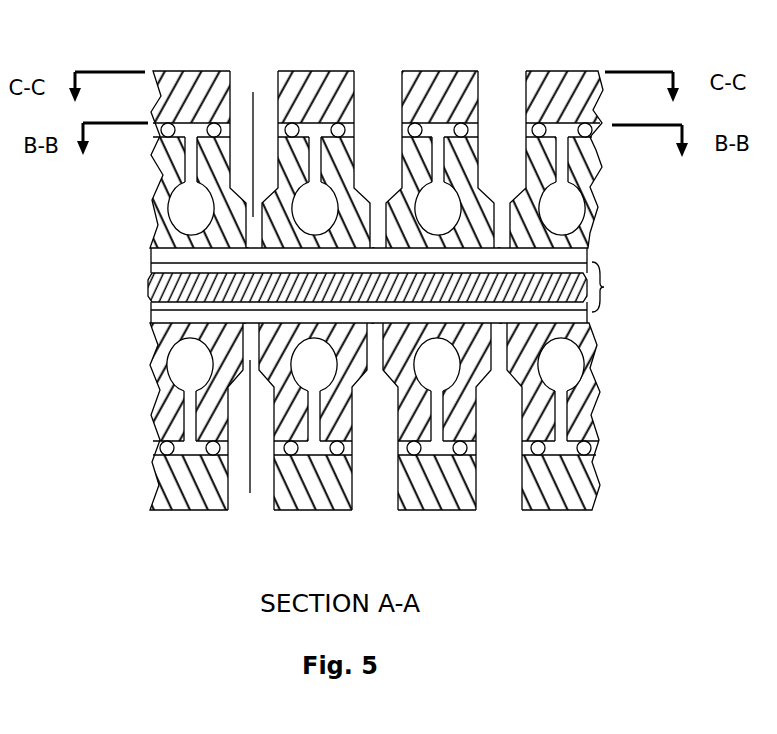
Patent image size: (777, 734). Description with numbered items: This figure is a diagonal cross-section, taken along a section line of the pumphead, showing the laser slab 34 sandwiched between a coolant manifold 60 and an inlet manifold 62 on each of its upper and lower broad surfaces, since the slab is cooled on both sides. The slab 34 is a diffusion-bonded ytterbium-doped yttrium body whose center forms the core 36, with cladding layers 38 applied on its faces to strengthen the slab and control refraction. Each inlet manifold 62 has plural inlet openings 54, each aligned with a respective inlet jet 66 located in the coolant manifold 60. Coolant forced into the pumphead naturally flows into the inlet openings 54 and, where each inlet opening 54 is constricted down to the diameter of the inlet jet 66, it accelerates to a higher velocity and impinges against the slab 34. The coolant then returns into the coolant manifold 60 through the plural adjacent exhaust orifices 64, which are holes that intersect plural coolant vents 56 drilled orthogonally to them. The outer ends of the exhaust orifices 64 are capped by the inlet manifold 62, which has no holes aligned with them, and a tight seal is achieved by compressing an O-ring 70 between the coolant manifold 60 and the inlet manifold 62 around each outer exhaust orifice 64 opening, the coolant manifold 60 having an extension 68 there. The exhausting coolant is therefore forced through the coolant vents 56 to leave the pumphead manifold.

The laser slab 34 is at (604, 287).
The core 36 is at (147, 283).
The cladding layers 38 is at (152, 265).
The inlet openings 54 is at (262, 86).
The coolant vents 56 is at (167, 206).
The coolant manifold 60 is at (183, 172).
The inlet manifold 62 is at (183, 71).
The exhaust orifices 64 is at (163, 256).
The inlet jets 66 is at (253, 94).
The extension 68 is at (205, 440).
The O-ring 70 is at (210, 455).